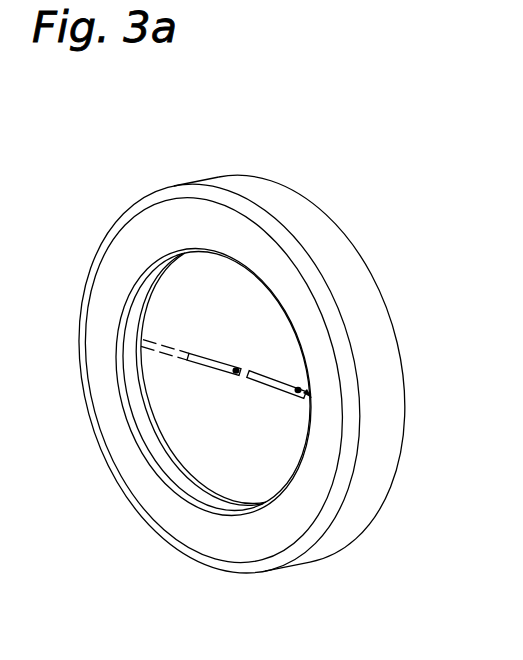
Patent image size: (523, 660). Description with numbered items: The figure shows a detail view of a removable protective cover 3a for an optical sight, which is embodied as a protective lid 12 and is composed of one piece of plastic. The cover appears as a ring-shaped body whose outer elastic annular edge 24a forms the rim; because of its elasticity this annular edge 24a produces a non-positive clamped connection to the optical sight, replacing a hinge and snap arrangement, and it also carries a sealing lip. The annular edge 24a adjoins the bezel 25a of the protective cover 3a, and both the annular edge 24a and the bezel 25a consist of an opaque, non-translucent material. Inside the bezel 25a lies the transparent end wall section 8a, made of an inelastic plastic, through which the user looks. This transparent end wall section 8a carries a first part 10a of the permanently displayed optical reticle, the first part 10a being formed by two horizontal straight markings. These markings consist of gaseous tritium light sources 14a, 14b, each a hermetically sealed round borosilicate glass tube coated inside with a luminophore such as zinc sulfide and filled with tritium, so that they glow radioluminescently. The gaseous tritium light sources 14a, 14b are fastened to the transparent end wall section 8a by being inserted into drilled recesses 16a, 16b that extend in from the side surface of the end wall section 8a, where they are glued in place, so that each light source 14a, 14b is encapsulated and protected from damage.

The protective lid 12 is at (299, 154).
The protective cover 3a is at (133, 197).
The bezel 25a is at (142, 257).
The outer elastic annular edge 24a is at (330, 247).
The transparent end wall section 8a is at (241, 478).
The first part of the reticle 10a is at (199, 346).
The gaseous tritium light source 14a is at (181, 362).
The gaseous tritium light source 14b is at (263, 385).
The drilled recess 16a is at (153, 362).
The drilled recess 16b is at (312, 398).